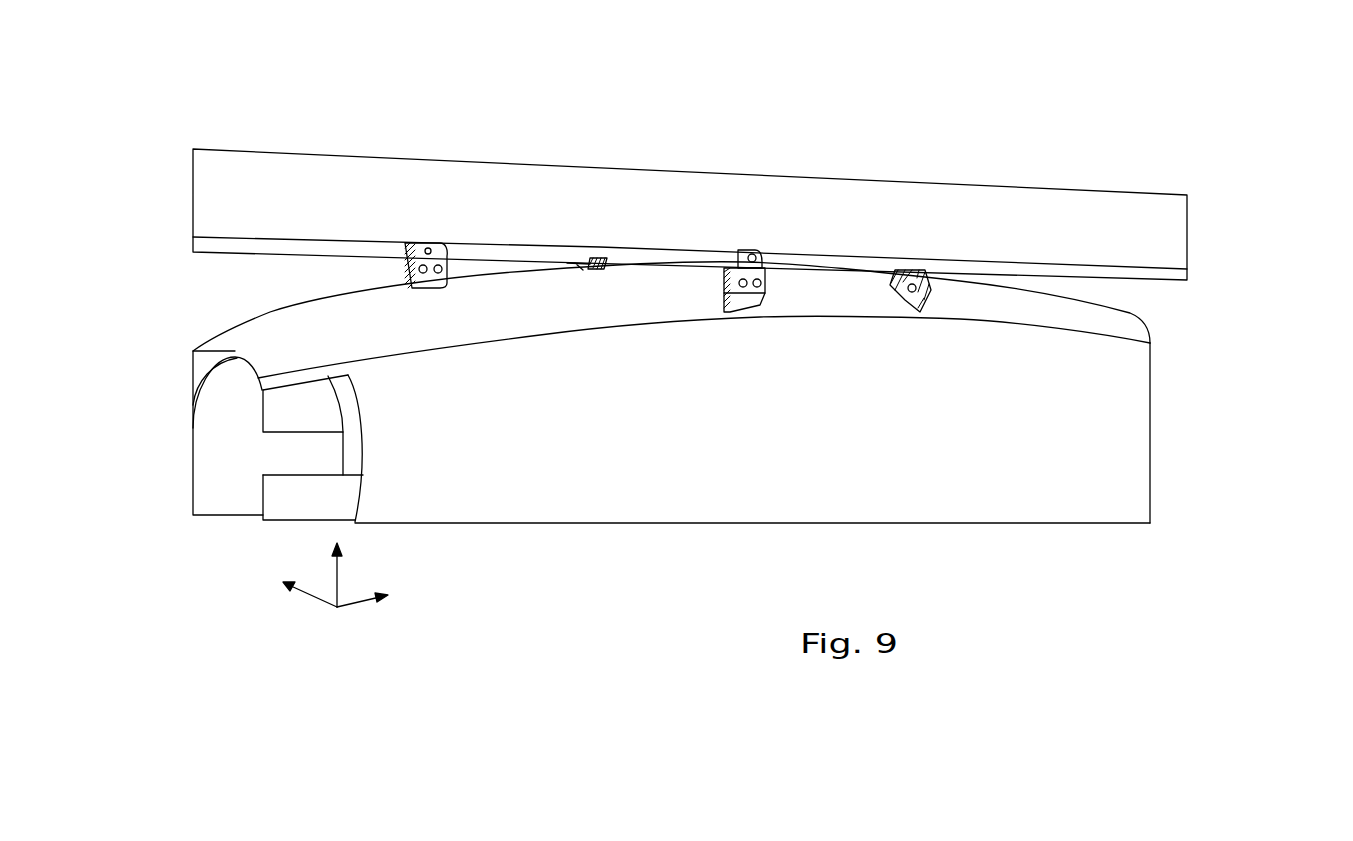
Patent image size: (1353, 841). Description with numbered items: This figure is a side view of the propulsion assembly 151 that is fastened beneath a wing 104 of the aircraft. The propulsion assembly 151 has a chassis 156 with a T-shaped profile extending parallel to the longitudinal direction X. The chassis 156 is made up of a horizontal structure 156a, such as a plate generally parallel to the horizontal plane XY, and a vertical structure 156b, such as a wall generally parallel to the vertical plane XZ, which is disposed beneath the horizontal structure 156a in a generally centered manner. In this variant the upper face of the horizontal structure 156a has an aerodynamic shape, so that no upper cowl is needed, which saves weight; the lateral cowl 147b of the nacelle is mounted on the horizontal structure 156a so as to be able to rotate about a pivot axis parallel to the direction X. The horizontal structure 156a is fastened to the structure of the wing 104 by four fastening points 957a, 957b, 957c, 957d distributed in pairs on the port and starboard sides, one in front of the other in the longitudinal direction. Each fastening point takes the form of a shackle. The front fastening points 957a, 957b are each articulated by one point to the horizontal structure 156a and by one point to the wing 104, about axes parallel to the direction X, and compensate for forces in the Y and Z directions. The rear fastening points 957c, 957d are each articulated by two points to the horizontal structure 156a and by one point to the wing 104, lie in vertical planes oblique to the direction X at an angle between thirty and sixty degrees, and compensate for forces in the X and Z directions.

The wing 104 is at (1053, 212).
The chassis 156 is at (1200, 292).
The horizontal structure 156a is at (235, 342).
The vertical structure 156b is at (292, 503).
The lateral cowl 147b is at (1127, 467).
The front fastening point 957a is at (589, 263).
The front fastening point 957b is at (908, 292).
The rear fastening point 957c is at (405, 250).
The rear fastening point 957d is at (757, 313).
The propulsion assembly 151 is at (243, 598).